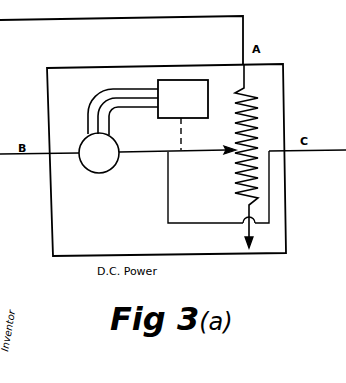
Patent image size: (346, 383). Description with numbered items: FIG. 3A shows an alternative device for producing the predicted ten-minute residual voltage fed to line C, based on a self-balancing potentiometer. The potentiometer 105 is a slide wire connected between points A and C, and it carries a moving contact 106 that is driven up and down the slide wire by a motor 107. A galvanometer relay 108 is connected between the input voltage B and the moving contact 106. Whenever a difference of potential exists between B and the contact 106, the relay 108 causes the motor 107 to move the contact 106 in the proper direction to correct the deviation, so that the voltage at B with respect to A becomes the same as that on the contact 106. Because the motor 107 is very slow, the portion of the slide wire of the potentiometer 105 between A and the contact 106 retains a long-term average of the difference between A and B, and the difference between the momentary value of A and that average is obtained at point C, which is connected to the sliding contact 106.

The potentiometer 105 is at (260, 128).
The contact 106 is at (231, 160).
The motor 107 is at (192, 80).
The galvanometer relay 108 is at (113, 169).